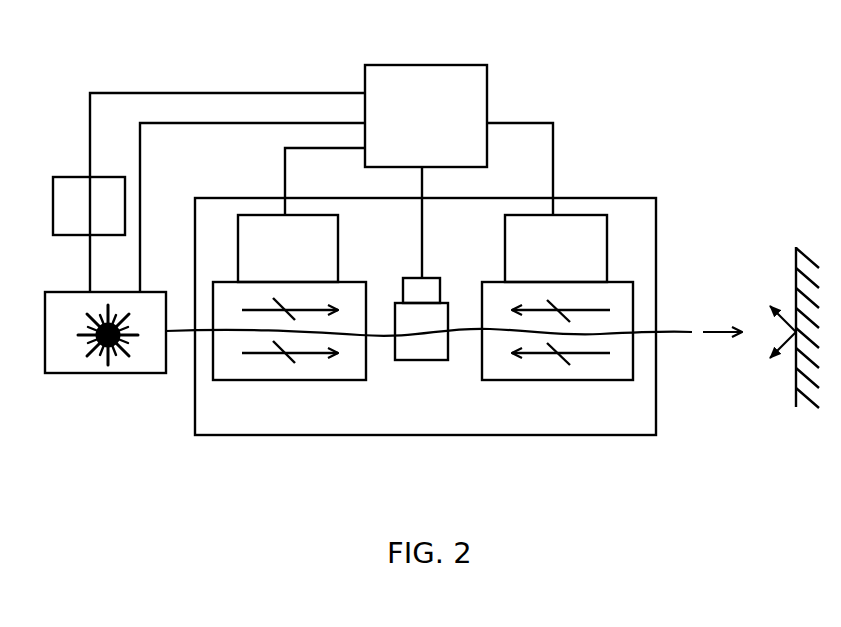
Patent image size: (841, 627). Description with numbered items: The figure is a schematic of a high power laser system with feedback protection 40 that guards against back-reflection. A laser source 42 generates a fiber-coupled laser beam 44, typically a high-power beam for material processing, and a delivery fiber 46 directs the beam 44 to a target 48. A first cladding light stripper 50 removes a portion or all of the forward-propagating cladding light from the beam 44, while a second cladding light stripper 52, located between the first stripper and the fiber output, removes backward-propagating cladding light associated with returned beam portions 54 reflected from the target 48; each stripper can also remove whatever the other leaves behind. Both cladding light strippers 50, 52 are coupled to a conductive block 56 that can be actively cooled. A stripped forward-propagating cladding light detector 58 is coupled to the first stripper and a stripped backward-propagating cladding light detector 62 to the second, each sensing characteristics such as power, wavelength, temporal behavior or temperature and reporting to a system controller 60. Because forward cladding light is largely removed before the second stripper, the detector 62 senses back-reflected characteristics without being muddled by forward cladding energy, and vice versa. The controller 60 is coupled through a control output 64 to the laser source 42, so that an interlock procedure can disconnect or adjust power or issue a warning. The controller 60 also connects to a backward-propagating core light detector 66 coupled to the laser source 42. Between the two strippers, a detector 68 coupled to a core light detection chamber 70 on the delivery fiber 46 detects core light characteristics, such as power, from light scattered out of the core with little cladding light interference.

The high power laser system with feedback protection 40 is at (713, 53).
The laser source 42 is at (138, 365).
The fiber-coupled laser beam 44 is at (720, 330).
The delivery fiber 46 is at (673, 333).
The target 48 is at (795, 273).
The first cladding light stripper 50 is at (257, 373).
The second cladding light stripper 52 is at (583, 373).
The returned beam portions 54 is at (795, 332).
The conductive block 56 is at (457, 413).
The stripped forward-propagating cladding light detector 58 is at (288, 248).
The system controller 60 is at (426, 116).
The stripped backward-propagating cladding light detector 62 is at (556, 248).
The control output 64 is at (242, 125).
The backward-propagating core light detector 66 is at (75, 197).
The detector 68 is at (425, 290).
The core light detection chamber 70 is at (420, 350).